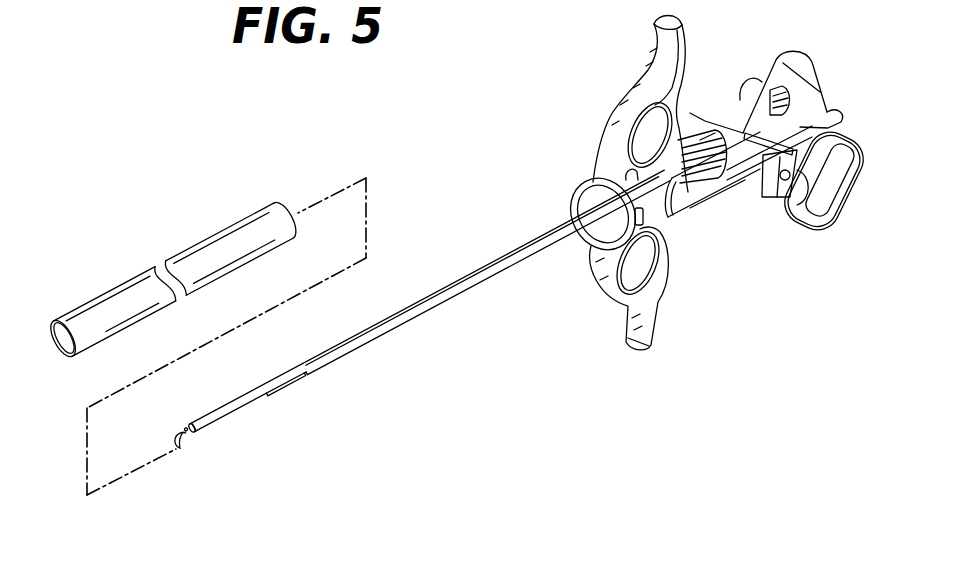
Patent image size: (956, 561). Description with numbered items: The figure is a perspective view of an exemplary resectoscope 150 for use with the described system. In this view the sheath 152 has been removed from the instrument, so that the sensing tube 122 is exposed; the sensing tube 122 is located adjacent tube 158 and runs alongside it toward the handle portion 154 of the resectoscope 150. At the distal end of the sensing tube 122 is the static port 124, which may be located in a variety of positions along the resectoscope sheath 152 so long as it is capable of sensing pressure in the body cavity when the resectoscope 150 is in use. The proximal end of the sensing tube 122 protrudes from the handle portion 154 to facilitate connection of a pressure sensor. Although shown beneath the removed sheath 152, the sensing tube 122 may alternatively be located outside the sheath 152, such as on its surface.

The resectoscope 150 is at (497, 142).
The sheath 152 is at (223, 240).
The handle portion 154 is at (727, 183).
The tube 158 is at (281, 373).
The sensing tube 122 is at (375, 343).
The static port 124 is at (210, 438).